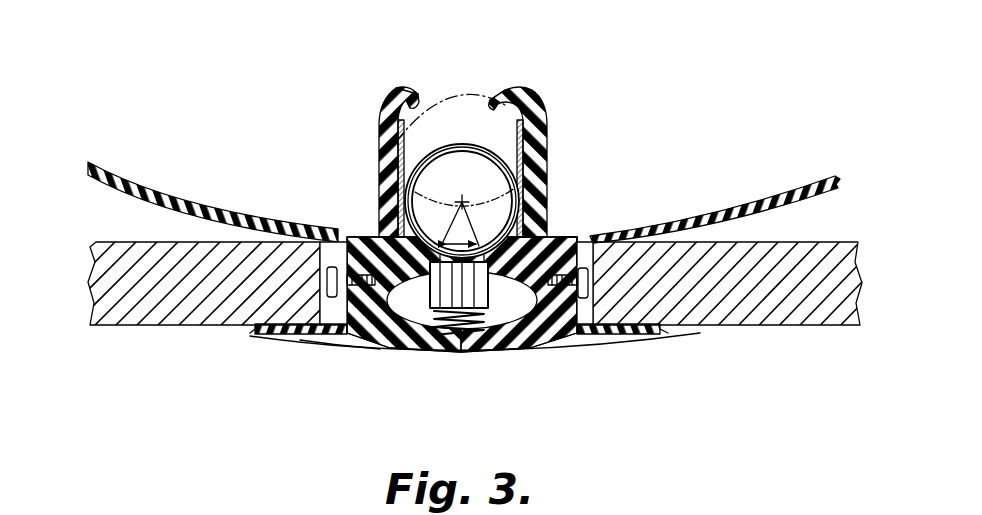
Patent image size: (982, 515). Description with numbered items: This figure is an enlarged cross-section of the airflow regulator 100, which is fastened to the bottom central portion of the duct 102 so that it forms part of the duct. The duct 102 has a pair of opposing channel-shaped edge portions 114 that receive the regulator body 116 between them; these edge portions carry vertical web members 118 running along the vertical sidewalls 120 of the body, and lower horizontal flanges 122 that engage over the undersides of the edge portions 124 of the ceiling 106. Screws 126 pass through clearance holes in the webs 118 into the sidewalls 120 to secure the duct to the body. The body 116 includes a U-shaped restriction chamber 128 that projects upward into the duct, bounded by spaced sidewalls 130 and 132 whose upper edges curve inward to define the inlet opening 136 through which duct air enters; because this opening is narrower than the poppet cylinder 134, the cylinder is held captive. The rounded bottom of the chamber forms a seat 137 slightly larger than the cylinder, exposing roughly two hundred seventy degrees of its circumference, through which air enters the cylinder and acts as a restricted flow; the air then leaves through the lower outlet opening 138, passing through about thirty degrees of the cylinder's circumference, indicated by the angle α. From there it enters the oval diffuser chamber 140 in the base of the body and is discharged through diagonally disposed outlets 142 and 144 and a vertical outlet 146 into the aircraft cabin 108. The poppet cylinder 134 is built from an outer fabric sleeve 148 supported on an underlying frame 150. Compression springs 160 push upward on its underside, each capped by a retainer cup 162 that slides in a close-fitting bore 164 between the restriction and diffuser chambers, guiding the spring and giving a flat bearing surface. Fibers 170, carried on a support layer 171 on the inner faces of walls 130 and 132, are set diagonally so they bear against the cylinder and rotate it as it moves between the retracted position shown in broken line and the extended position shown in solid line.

The airflow regulator 100 is at (256, 81).
The duct 102 is at (835, 176).
The ceiling 106 is at (790, 328).
The aircraft cabin 108 is at (666, 454).
The channel-shaped edge portions 114 is at (300, 348).
The regulator body 116 is at (567, 213).
The vertical web members 118 is at (300, 338).
The vertical sidewalls 120 is at (556, 337).
The lower horizontal flanges 122 is at (275, 334).
The edge portions of the ceiling 124 is at (285, 293).
The screws 126 is at (328, 240).
The restriction chamber 128 is at (414, 108).
The sidewall 130 is at (382, 160).
The sidewall 132 is at (549, 130).
The poppet cylinder 134 is at (480, 152).
The inlet opening 136 is at (466, 90).
The seat 137 is at (462, 300).
The outlet opening 138 is at (382, 348).
The diffuser chamber 140 is at (484, 350).
The diagonally disposed outlet 142 is at (356, 344).
The diagonally disposed outlet 144 is at (533, 337).
The vertical outlet 146 is at (456, 345).
The sleeve 148 is at (418, 162).
The frame 150 is at (422, 168).
The compression springs 160 is at (442, 344).
The retainer cup 162 is at (566, 240).
The bore 164 is at (468, 208).
The fibers 170 is at (492, 104).
The support layer 171 is at (547, 166).